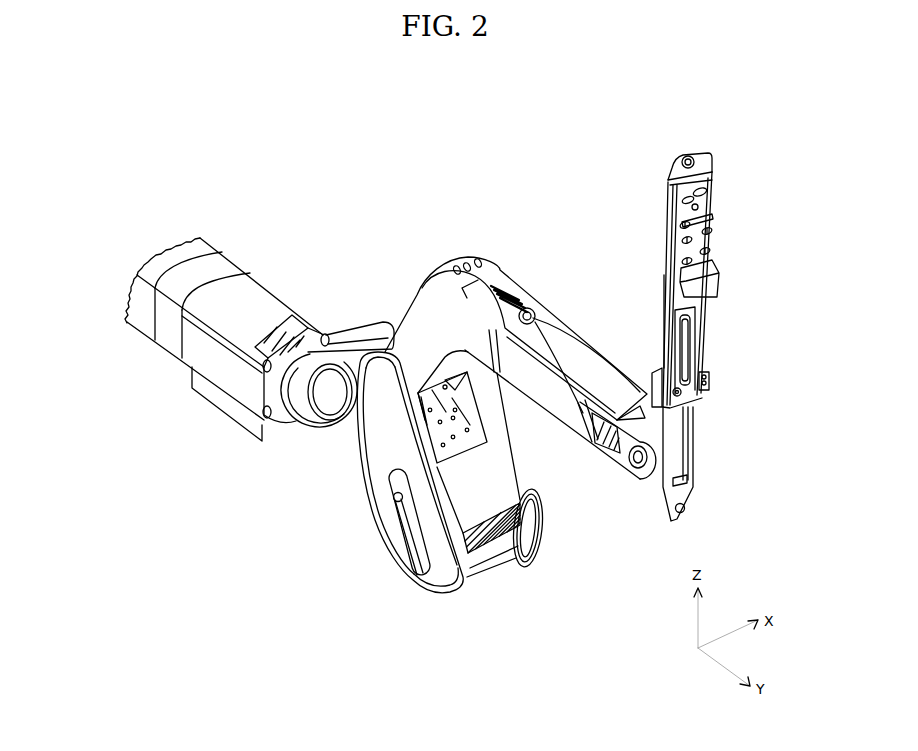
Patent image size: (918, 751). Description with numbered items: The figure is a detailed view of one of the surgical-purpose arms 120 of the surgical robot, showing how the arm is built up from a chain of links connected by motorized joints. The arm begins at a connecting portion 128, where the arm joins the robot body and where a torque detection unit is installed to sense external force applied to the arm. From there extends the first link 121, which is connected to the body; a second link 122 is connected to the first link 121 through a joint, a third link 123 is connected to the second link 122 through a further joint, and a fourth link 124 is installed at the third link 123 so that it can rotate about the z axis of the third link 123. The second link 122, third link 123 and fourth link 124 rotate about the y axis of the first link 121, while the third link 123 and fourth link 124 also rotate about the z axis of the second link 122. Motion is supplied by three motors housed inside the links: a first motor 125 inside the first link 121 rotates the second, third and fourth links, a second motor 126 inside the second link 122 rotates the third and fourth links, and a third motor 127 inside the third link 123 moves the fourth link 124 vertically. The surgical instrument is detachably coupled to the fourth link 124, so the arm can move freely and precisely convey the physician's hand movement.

The surgical-purpose arm 120 is at (752, 194).
The first link 121 is at (255, 298).
The second link 122 is at (362, 330).
The third link 123 is at (355, 468).
The fourth link 124 is at (693, 150).
The first motor 125 is at (284, 324).
The second motor 126 is at (498, 542).
The third motor 127 is at (607, 447).
The connecting portion 128 is at (163, 321).